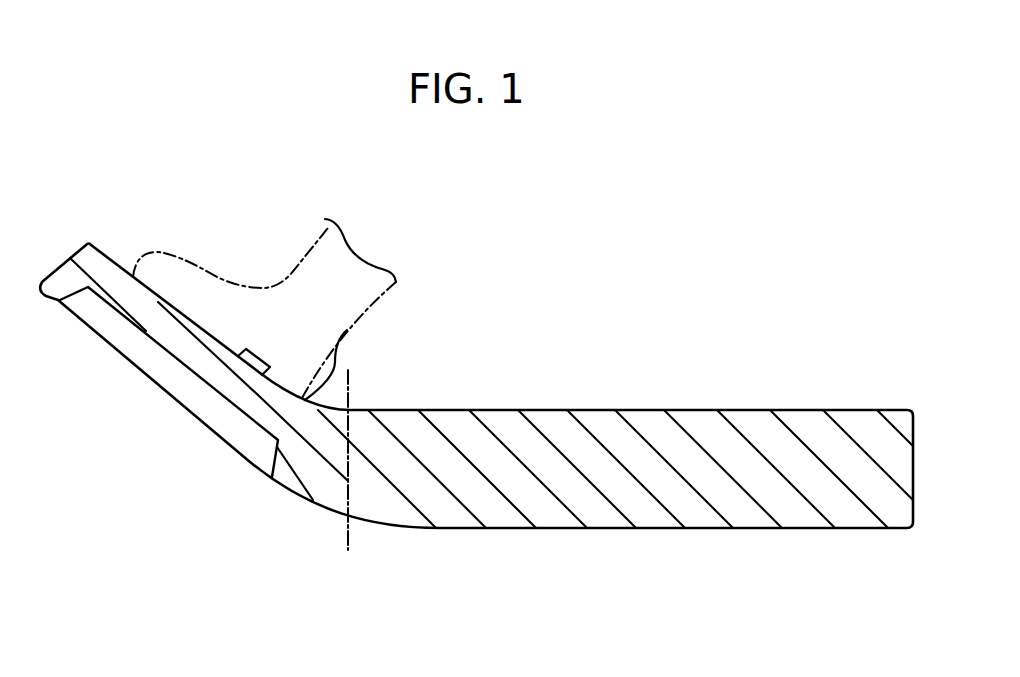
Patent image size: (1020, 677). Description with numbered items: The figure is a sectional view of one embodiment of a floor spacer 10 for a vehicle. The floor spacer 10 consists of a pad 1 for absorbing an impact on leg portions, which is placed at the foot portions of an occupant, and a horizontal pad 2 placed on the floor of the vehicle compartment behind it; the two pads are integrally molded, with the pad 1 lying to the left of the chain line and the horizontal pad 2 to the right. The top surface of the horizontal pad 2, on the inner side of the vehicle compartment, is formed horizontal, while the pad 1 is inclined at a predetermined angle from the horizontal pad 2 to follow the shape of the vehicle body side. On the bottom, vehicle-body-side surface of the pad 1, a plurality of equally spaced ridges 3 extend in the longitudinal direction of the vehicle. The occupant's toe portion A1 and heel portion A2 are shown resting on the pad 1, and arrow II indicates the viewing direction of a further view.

The floor spacer 10 is at (635, 311).
The pad for absorbing an impact on leg portions 1 is at (320, 452).
The horizontal pad 2 is at (628, 430).
The ridge 3 is at (222, 416).
The toe portion A1 is at (180, 313).
The heel portion A2 is at (283, 388).
The arrow II is at (131, 419).